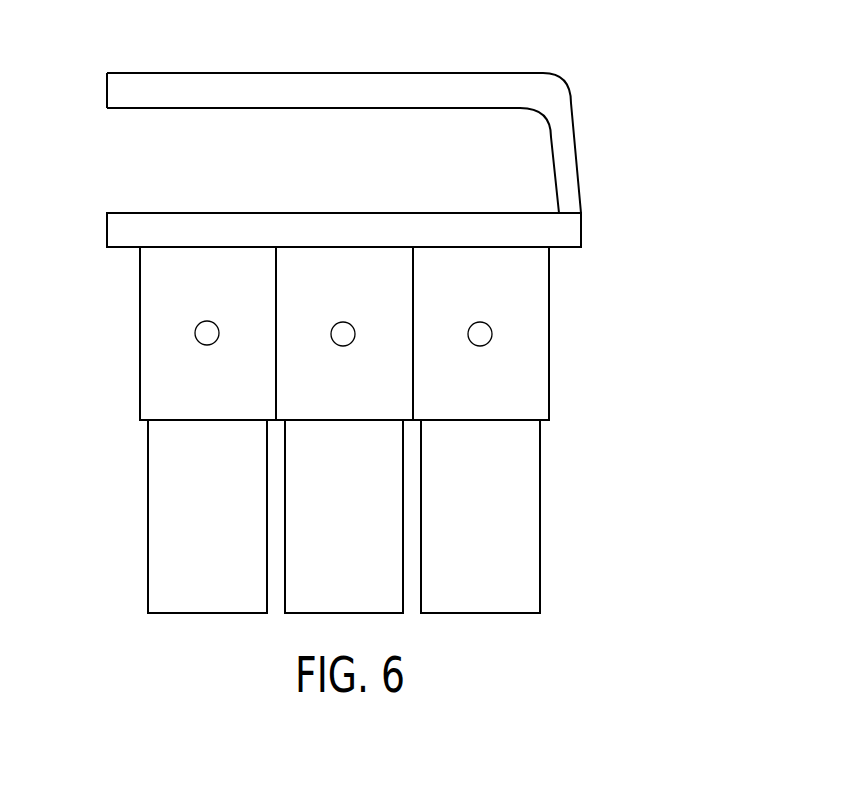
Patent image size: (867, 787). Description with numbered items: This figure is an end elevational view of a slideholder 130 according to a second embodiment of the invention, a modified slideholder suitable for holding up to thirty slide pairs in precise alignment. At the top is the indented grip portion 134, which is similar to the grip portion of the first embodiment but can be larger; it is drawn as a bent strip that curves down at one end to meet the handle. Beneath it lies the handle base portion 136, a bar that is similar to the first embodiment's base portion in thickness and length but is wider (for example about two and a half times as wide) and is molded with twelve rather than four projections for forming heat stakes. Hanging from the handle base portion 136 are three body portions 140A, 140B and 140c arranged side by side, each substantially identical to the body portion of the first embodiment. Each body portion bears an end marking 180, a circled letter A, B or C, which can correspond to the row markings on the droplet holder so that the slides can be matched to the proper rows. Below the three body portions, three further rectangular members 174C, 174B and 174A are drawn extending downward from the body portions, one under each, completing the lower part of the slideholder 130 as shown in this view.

The indented grip portion 134 is at (480, 72).
The slideholder 130 is at (578, 170).
The handle base portion 136 is at (583, 230).
The body portion 140A is at (146, 367).
The body portion 140B is at (306, 295).
The body portion 140c is at (539, 368).
The end marking 180 is at (500, 332).
The terminal A 174A is at (533, 520).
The terminal B 174B is at (310, 546).
The terminal C 174C is at (157, 518).